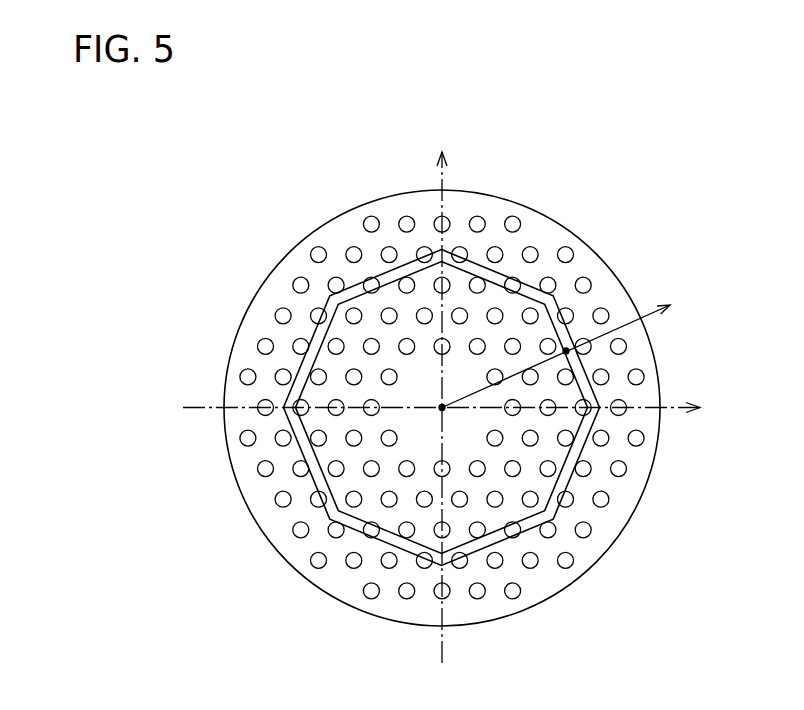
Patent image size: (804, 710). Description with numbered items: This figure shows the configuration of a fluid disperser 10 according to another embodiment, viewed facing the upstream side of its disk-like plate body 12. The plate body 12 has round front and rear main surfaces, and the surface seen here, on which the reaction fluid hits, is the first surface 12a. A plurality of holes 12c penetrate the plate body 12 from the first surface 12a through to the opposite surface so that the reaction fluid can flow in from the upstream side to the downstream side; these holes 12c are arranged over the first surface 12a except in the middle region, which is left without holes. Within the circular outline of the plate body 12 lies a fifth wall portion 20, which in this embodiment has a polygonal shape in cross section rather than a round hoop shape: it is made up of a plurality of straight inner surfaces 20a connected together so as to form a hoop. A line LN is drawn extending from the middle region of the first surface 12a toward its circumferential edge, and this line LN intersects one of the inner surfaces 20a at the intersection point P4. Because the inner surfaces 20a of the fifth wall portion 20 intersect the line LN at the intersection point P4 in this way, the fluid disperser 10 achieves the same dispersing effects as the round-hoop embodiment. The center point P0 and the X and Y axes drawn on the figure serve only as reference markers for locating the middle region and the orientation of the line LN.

The fluid disperser 10 is at (441, 388).
The plate body 12 is at (260, 293).
The first surface 12a is at (250, 360).
The holes 12c is at (315, 567).
The fifth wall portion 20 is at (308, 443).
The inner surfaces 20a is at (575, 393).
The line LN is at (645, 330).
The intersection point P4 is at (566, 351).
The center point P0 is at (444, 410).
The X axis X is at (442, 391).
The Y axis Y is at (450, 409).